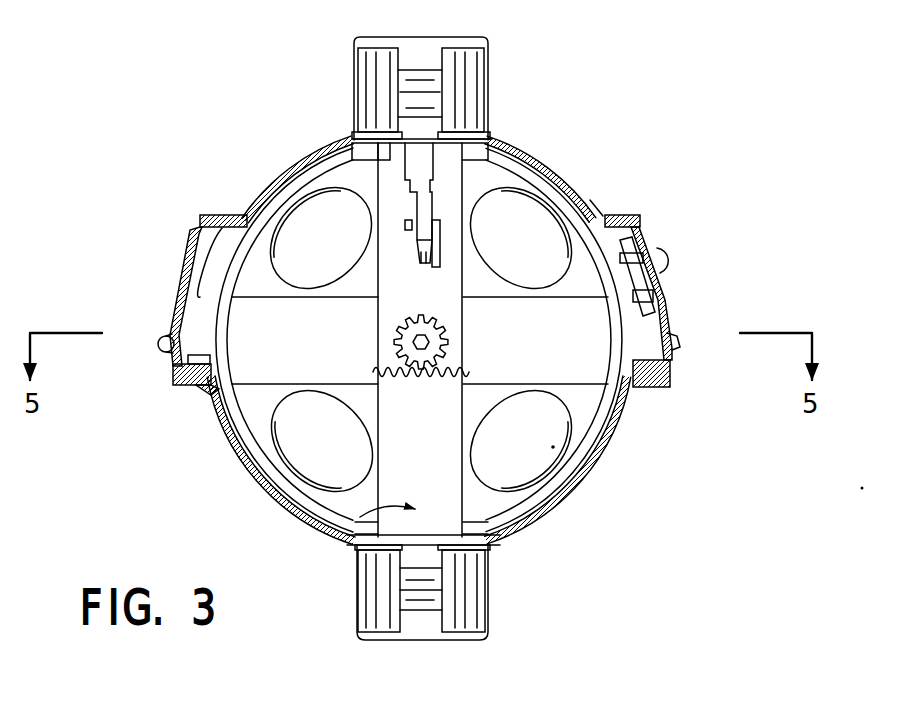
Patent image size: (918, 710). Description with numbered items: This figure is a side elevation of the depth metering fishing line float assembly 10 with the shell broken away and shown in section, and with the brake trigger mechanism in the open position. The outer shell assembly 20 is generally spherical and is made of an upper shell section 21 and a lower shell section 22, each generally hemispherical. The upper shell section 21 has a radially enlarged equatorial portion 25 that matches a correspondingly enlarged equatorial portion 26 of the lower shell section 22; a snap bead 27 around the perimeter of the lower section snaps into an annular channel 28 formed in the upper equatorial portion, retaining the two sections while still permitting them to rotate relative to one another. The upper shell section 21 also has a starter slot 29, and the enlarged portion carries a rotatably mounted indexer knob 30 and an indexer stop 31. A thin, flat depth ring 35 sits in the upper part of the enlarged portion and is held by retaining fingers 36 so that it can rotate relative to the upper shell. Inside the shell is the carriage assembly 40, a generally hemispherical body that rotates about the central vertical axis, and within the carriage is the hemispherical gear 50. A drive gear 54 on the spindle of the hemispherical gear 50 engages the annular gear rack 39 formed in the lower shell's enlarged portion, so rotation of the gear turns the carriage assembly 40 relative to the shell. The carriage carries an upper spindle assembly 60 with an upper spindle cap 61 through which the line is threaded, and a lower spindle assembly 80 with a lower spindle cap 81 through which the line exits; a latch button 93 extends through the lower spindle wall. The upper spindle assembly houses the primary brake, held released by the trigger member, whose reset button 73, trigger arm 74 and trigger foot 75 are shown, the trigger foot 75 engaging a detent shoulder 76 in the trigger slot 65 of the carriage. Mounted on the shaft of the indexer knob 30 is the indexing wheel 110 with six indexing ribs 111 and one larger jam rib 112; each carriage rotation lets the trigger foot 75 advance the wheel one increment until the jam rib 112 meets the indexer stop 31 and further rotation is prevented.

The depth metering fishing line float assembly 10 is at (105, 124).
The shell assembly 20 is at (245, 182).
The upper shell section 21 is at (294, 160).
The lower shell section 22 is at (542, 527).
The equatorial portion 25 is at (205, 220).
The equatorial portion 26 is at (668, 390).
The snap bead 27 is at (160, 352).
The annular channel 28 is at (200, 383).
The starter slot 29 is at (598, 192).
The indexer knob 30 is at (672, 262).
The indexer stop 31 is at (618, 216).
The depth ring 35 is at (181, 283).
The retaining fingers 36 is at (187, 243).
The annular gear rack 39 is at (385, 358).
The carriage assembly 40 is at (333, 537).
The hemispherical gear 50 is at (260, 407).
The drive gear 54 is at (445, 318).
The upper spindle assembly 60 is at (510, 57).
The upper spindle cap 61 is at (432, 40).
The trigger slot 65 is at (405, 231).
The reset button 73 is at (417, 82).
The trigger arm 74 is at (432, 204).
The trigger foot 75 is at (413, 240).
The trigger flanges 76 is at (440, 240).
The lower spindle assembly 80 is at (505, 630).
The lower spindle cap 81 is at (433, 643).
The latch button 93 is at (417, 597).
The indexing wheel 110 is at (645, 250).
The indexing ribs 111 is at (654, 292).
The jam rib 112 is at (678, 336).